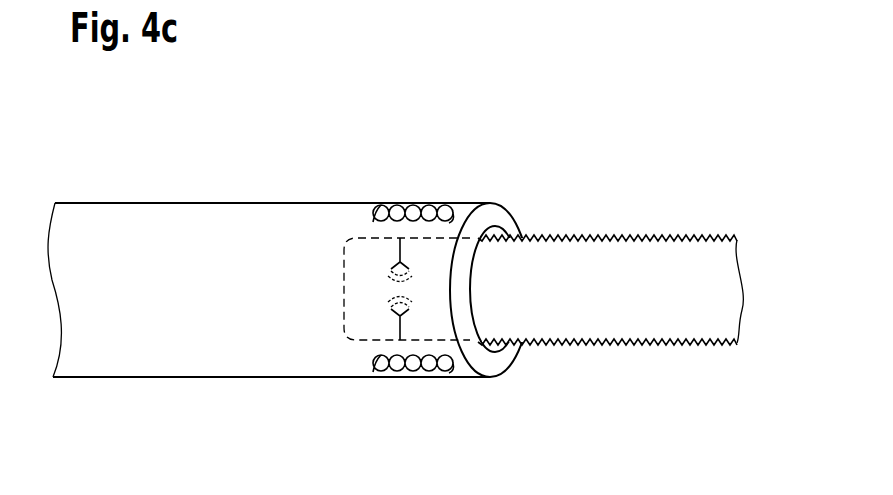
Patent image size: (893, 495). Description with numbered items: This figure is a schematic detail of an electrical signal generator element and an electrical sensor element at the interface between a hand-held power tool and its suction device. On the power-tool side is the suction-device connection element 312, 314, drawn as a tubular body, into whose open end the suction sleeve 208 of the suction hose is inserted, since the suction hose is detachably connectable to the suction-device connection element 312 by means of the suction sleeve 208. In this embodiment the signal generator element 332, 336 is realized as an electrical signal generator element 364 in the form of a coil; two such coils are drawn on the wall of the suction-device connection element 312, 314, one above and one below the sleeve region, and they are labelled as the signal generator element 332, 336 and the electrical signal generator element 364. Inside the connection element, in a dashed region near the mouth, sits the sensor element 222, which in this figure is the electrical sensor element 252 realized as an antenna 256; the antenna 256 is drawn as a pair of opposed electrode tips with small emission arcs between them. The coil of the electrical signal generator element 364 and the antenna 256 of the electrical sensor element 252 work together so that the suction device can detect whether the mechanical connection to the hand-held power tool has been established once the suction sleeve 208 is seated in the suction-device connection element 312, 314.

The suction sleeve 208 is at (445, 308).
The sensor element 222 is at (309, 289).
The electrical sensor element 252 is at (309, 289).
The antenna 256 is at (400, 262).
The suction-device connection element 312 is at (269, 327).
The suction-device connection element 314 is at (213, 377).
The signal generator element 332 is at (422, 289).
The signal generator element 336 is at (422, 289).
The electrical signal generator element 364 is at (417, 203).